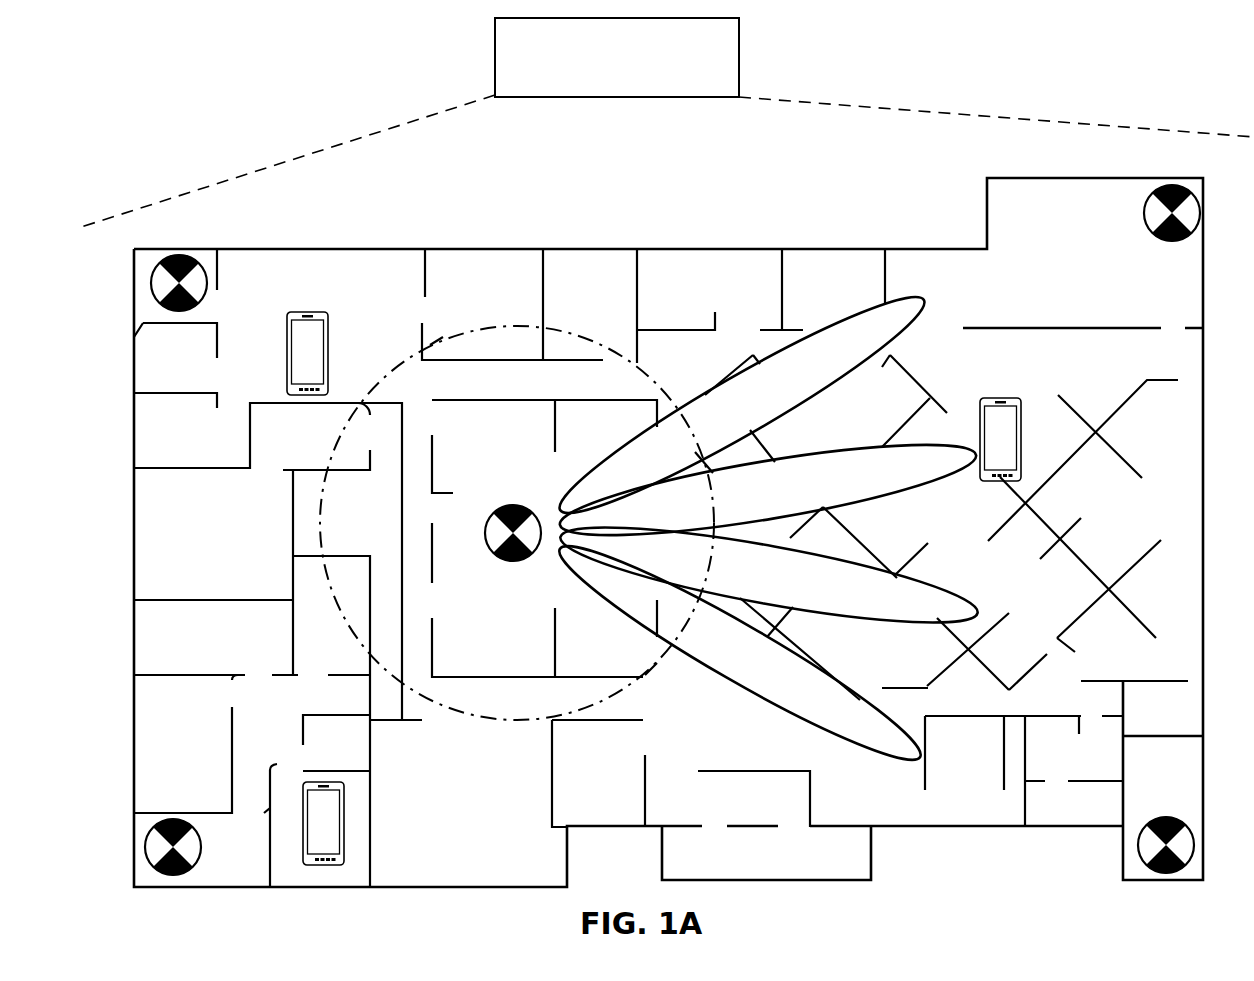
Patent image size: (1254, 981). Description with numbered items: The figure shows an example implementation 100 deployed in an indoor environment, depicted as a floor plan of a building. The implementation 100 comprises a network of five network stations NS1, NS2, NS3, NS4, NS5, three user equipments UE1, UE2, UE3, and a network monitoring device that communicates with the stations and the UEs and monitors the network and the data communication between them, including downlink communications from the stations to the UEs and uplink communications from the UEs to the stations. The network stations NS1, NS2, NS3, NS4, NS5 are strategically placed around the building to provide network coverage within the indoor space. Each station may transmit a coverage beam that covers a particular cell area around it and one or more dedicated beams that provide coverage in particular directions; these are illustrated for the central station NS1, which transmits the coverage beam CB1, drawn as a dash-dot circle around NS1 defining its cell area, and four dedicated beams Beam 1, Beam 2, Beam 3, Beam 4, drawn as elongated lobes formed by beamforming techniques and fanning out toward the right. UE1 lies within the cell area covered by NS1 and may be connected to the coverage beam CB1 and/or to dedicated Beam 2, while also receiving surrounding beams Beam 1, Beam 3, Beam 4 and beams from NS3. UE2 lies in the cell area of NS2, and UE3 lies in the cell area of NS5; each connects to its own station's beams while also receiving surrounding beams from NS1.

The implementation 100 is at (193, 46).
The network station NS1 is at (513, 517).
The network station NS2 is at (179, 267).
The network station NS3 is at (1172, 196).
The network station NS4 is at (1166, 868).
The network station NS5 is at (173, 871).
The UE UE1 is at (1001, 426).
The UE UE2 is at (307, 335).
The UE UE3 is at (323, 806).
The coverage beam CB1 is at (516, 523).
The dedicated beam Beam 1 is at (742, 405).
The dedicated beam Beam 2 is at (768, 490).
The dedicated beam Beam 3 is at (769, 575).
The dedicated beam Beam 4 is at (740, 653).